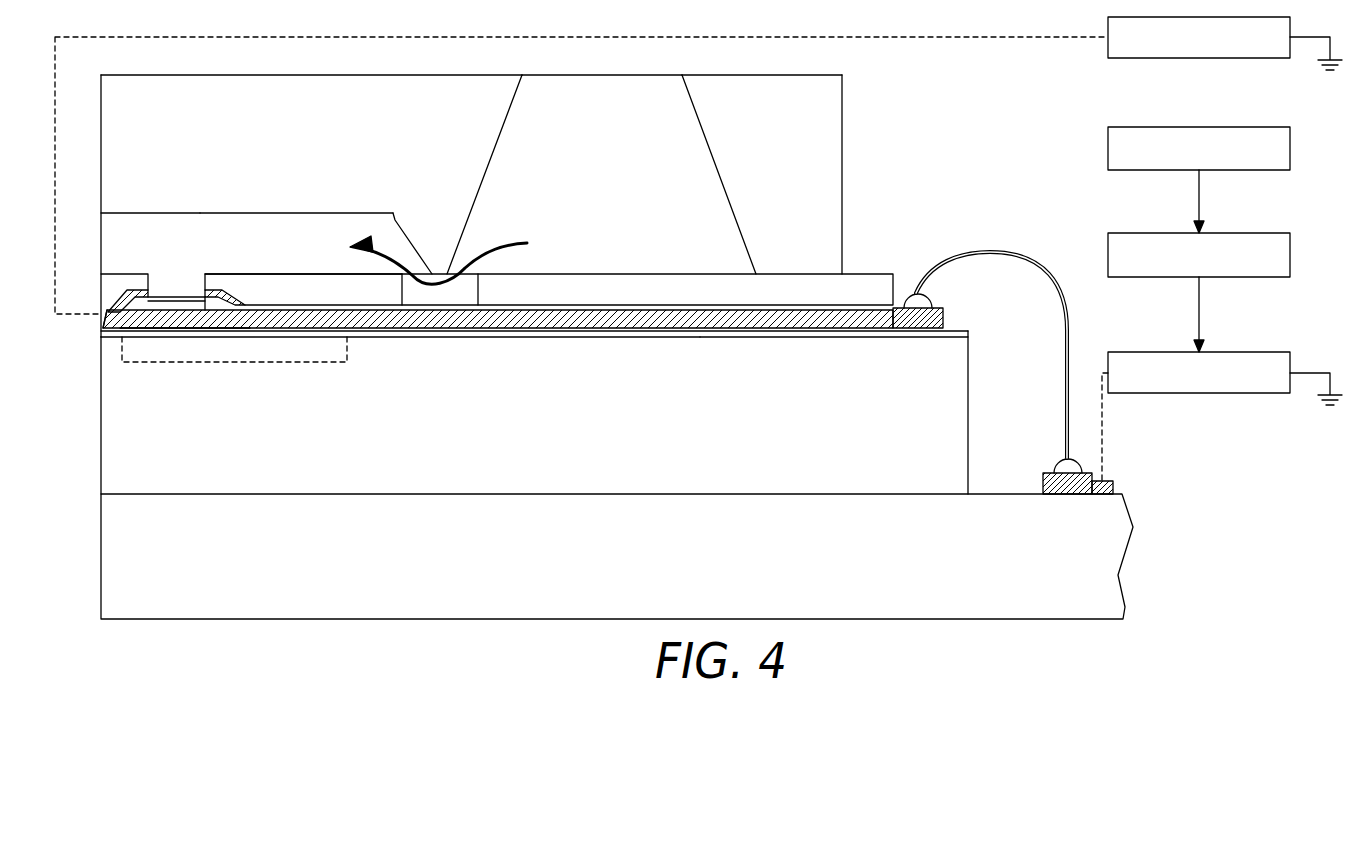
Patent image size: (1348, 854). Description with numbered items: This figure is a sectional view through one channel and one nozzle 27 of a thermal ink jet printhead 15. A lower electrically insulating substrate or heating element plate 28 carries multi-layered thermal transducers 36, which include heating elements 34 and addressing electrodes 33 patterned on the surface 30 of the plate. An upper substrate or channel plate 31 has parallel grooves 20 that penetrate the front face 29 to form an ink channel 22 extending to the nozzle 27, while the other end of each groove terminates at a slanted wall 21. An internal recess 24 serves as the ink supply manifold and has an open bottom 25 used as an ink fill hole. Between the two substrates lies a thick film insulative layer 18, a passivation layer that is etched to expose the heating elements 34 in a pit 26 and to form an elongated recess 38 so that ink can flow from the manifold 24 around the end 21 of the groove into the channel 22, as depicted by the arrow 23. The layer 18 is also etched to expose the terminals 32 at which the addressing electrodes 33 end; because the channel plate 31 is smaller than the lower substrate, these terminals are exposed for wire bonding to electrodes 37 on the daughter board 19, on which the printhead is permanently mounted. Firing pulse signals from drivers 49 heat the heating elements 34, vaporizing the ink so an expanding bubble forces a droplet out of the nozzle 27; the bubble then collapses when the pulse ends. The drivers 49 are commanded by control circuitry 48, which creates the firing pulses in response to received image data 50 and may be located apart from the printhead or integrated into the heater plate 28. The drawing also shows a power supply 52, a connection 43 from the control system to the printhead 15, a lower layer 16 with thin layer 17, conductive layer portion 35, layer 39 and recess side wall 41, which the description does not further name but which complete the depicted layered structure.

The thermal ink jet printhead 15 is at (500, 66).
The first electrode layer 16 is at (103, 318).
The thin emissive layer 17 is at (155, 300).
The thick film insulative layer 18 is at (101, 290).
The daughter board 19 is at (101, 533).
The grooves 20 is at (259, 213).
The slanted wall 21 is at (402, 232).
The ink channel 22 is at (331, 268).
The arrow 23 is at (500, 242).
The internal recess 24 is at (611, 176).
The open bottom 25 is at (628, 80).
The pit 26 is at (152, 275).
The nozzle 27 is at (101, 216).
The heating element plate 28 is at (101, 443).
The front face 29 is at (101, 113).
The surface 30 is at (955, 330).
The channel plate 31 is at (212, 77).
The terminals 32 is at (934, 300).
The addressing electrodes 33 is at (560, 330).
The heating elements 34 is at (198, 328).
The edge of conductive layer 35 is at (116, 330).
The thermal transducers 36 is at (188, 285).
The electrodes 37 is at (1062, 495).
The elongated recess 38 is at (412, 292).
The lower electrode layer 39 is at (700, 338).
The gap side wall 41 is at (472, 302).
The enclosure boundary 43 is at (905, 37).
The control circuitry 48 is at (1170, 277).
The drivers 49 is at (1207, 393).
The image data 50 is at (1170, 170).
The power supply 52 is at (1210, 58).